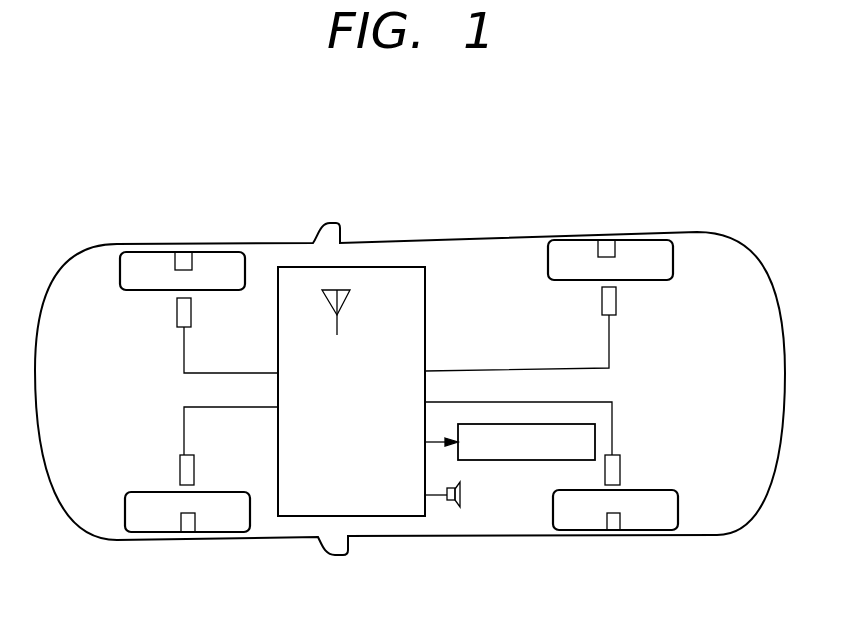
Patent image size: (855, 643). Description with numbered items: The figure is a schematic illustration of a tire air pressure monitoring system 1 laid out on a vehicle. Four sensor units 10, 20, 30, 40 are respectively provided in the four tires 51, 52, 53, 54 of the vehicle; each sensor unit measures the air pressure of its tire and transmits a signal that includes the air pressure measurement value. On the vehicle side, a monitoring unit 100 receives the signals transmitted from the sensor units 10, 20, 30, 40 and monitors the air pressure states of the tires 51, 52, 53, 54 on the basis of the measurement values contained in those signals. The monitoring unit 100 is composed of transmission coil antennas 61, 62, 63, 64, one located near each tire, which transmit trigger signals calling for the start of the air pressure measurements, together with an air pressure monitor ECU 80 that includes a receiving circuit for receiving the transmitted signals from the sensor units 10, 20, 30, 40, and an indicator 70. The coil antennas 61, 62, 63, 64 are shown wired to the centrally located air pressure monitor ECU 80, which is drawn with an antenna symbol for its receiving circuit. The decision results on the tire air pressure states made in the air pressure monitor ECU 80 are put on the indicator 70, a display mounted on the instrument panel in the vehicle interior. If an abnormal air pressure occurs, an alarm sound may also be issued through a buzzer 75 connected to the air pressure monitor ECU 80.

The tire air pressure monitoring system 1 is at (161, 158).
The monitoring unit 100 is at (455, 236).
The sensor unit 10 is at (182, 253).
The sensor unit 20 is at (190, 527).
The sensor unit 30 is at (607, 243).
The sensor unit 40 is at (613, 527).
The tire 51 is at (138, 260).
The tire 52 is at (143, 518).
The tire 53 is at (562, 250).
The tire 54 is at (568, 517).
The transmission coil antenna 61 is at (175, 312).
The transmission coil antenna 62 is at (180, 467).
The transmission coil antenna 63 is at (617, 297).
The transmission coil antenna 64 is at (620, 467).
The indicator 70 is at (505, 460).
The buzzer 75 is at (447, 508).
The air pressure monitor ECU 80 is at (388, 267).